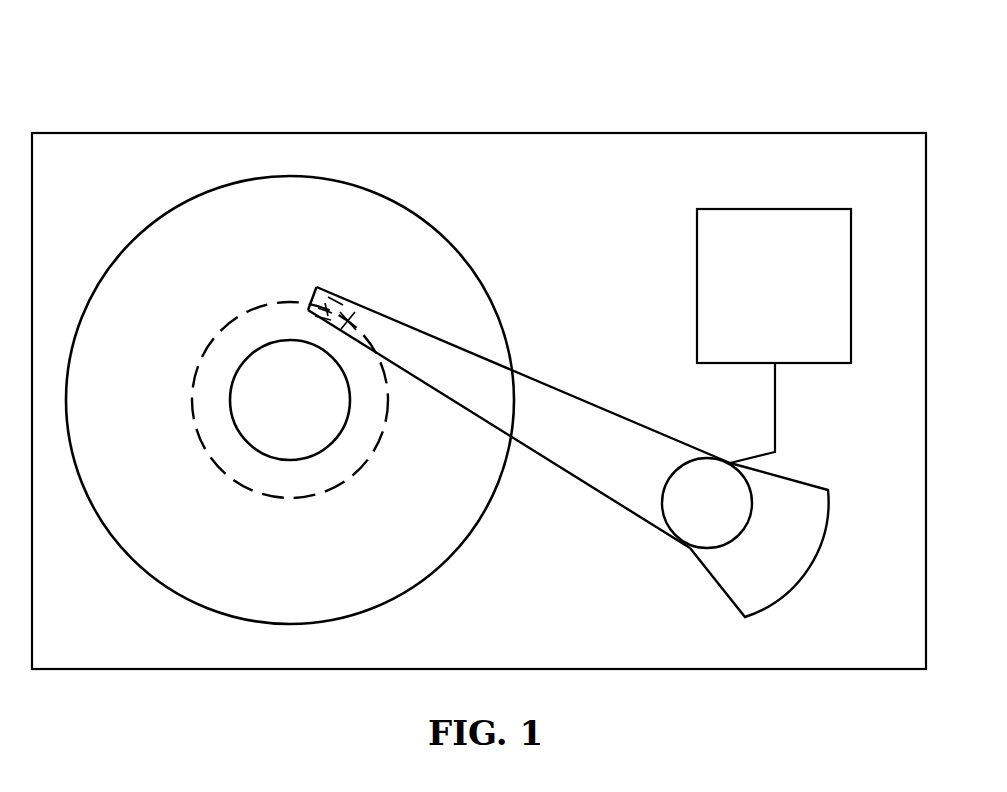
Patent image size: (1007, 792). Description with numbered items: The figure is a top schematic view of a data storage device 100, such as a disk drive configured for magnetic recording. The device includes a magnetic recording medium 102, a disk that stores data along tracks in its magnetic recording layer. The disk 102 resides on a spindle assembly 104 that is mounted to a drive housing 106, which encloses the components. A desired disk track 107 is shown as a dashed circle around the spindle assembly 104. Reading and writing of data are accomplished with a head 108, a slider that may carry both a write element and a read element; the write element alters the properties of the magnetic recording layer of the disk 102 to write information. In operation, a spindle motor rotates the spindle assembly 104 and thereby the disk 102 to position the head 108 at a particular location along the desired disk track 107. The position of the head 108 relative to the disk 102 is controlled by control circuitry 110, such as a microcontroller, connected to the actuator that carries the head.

The data storage device 100 is at (192, 98).
The magnetic recording medium 102 is at (448, 243).
The spindle assembly 104 is at (315, 405).
The drive housing 106 is at (578, 133).
The disk track 107 is at (232, 320).
The head 108 is at (342, 303).
The control circuitry 110 is at (795, 303).